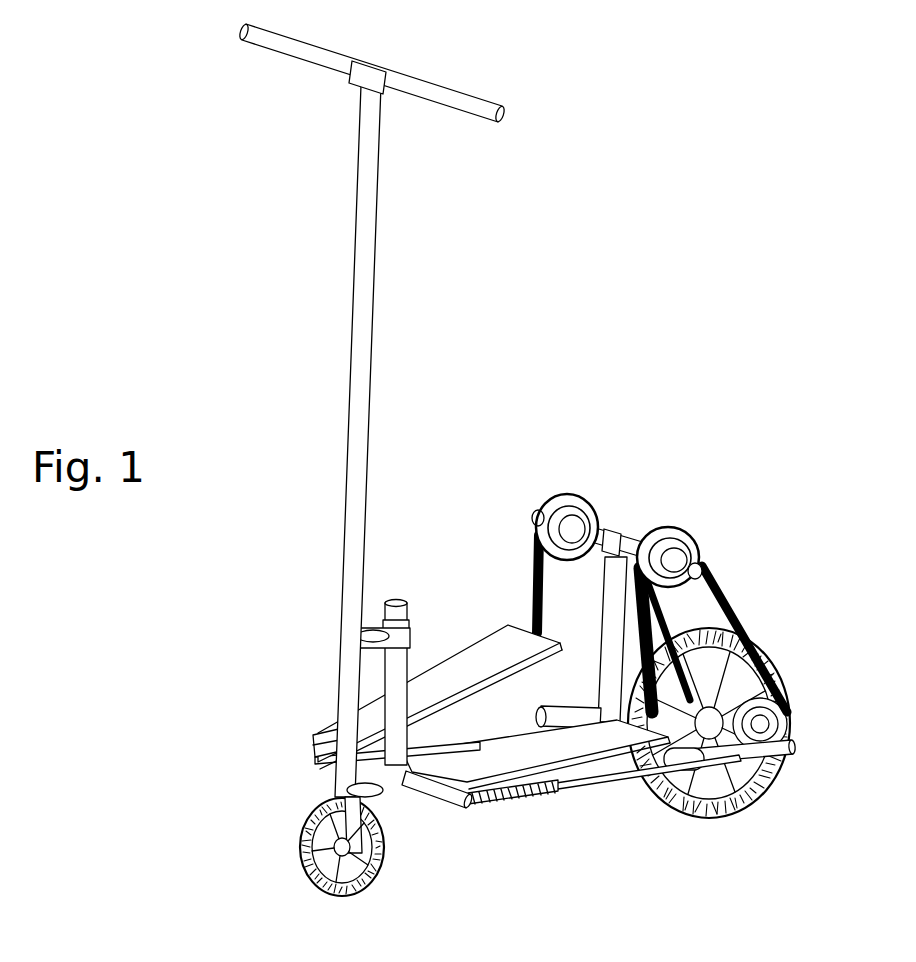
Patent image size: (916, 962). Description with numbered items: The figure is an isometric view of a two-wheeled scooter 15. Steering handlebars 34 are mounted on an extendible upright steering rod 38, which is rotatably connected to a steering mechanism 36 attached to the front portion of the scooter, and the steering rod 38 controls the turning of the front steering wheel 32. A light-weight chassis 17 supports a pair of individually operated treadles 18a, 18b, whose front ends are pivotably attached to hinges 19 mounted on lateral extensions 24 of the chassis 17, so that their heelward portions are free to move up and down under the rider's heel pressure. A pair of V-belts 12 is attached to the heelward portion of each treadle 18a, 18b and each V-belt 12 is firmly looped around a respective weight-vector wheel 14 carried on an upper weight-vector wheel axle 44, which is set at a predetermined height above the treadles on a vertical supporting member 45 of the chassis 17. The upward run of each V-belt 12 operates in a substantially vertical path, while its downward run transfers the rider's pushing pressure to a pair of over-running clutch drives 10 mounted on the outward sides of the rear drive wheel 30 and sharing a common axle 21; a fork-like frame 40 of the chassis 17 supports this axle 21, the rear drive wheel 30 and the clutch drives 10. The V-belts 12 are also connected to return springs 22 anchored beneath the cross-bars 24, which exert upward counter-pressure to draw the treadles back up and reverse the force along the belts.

The over-running clutch drives 10 is at (787, 723).
The V-belts 12 is at (530, 590).
The weight-vector wheels 14 is at (590, 495).
The two-wheeled scooter 15 is at (653, 367).
The chassis 17 is at (423, 742).
The treadle 18a is at (468, 650).
The treadle 18b is at (577, 768).
The hinges 19 is at (440, 803).
The axle 21 is at (767, 668).
The return springs 22 is at (518, 800).
The lateral extensions 24 is at (318, 742).
The rear drive wheel 30 is at (787, 643).
The front steering wheel 32 is at (300, 853).
The steering handlebars 34 is at (447, 82).
The steering mechanism 36 is at (410, 530).
The steering rod 38 is at (345, 262).
The fork-like frame 40 is at (563, 708).
The weight-vector wheel axle 44 is at (615, 535).
The vertical supporting member 45 is at (605, 633).